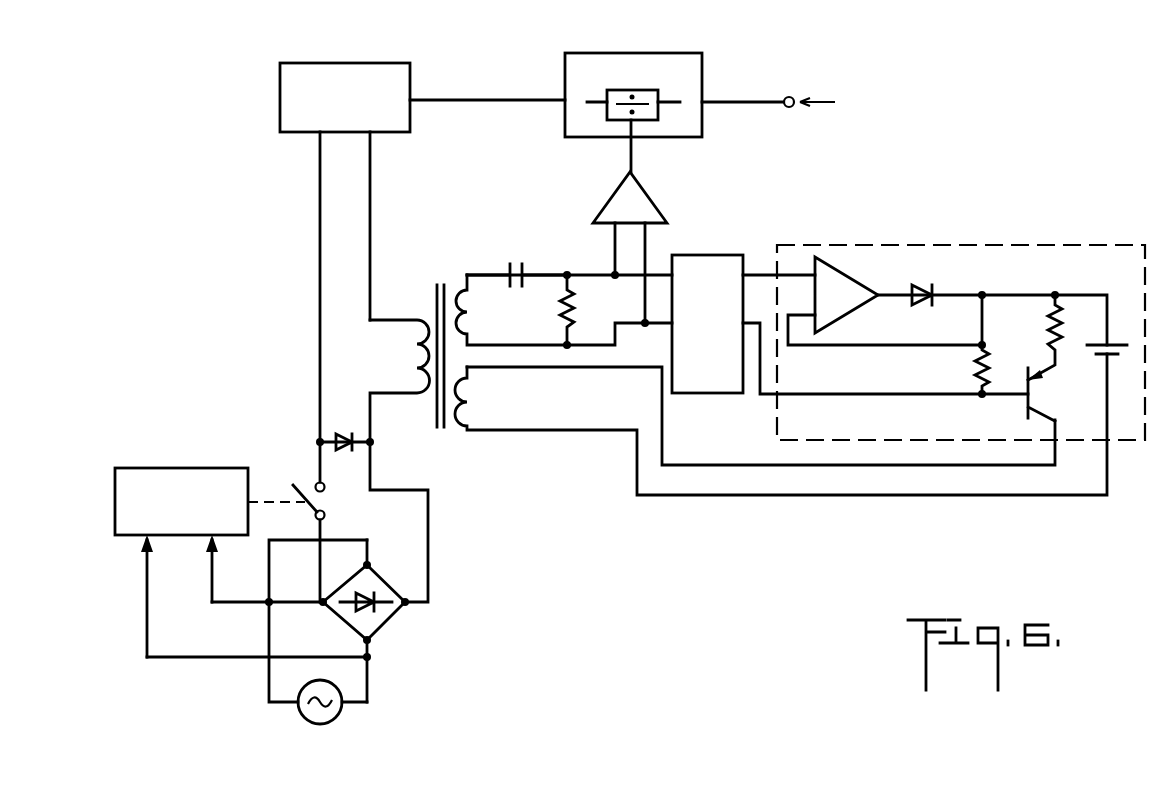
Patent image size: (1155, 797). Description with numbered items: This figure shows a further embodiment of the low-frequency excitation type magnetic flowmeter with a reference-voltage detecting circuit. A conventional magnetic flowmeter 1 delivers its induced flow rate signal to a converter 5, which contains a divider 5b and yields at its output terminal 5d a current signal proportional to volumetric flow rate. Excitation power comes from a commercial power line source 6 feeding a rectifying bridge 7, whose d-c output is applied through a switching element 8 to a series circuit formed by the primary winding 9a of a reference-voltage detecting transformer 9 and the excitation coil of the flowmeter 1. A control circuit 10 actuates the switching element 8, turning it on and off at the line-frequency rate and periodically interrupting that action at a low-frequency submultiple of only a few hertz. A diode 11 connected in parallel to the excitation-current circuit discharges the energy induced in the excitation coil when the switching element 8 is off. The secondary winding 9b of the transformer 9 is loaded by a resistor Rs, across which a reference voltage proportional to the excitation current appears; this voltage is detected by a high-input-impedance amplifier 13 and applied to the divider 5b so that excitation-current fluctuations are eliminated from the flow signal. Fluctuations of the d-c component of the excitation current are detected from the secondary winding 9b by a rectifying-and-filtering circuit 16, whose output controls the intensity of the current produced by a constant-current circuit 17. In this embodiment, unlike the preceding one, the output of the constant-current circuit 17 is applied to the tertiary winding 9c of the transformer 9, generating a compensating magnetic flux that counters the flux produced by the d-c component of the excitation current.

The magnetic flowmeter 1 is at (405, 63).
The converter 5 is at (690, 53).
The divider 5b is at (606, 125).
The output terminal 5d is at (790, 97).
The commercial power line source 6 is at (336, 719).
The rectifying bridge 7 is at (388, 622).
The switching element 8 is at (325, 502).
The reference-voltage detecting transformer 9 is at (444, 272).
The primary winding 9a is at (410, 352).
The secondary winding 9b is at (480, 316).
The tertiary winding 9c is at (480, 403).
The control circuit 10 is at (115, 510).
The diode 11 is at (338, 434).
The amplifier 13 is at (650, 200).
The rectifying-and-filtering circuit 16 is at (708, 395).
The constant-current circuit 17 is at (1035, 243).
The resistor Rs is at (575, 322).